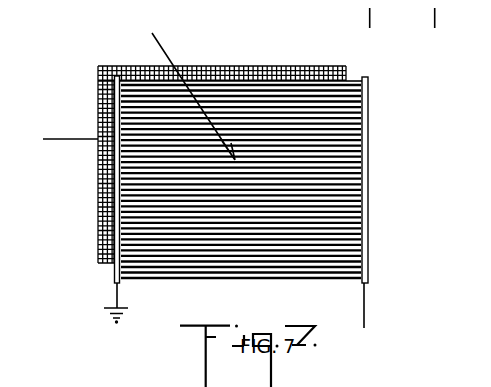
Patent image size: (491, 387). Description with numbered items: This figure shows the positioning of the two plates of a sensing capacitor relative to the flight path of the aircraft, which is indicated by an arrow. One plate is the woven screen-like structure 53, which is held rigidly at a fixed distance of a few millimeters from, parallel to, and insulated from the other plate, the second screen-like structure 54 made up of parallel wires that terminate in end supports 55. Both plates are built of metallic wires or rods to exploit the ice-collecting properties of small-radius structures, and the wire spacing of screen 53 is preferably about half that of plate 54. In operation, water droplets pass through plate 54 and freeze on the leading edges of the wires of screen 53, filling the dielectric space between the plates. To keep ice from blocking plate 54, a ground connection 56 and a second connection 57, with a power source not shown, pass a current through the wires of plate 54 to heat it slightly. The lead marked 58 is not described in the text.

The screen-like structure 53 is at (263, 28).
The second screen-like structure 54 is at (345, 72).
The end supports 55 is at (359, 107).
The ground connection 56 is at (98, 302).
The second connection 57 is at (357, 290).
The input lead 58 is at (58, 131).